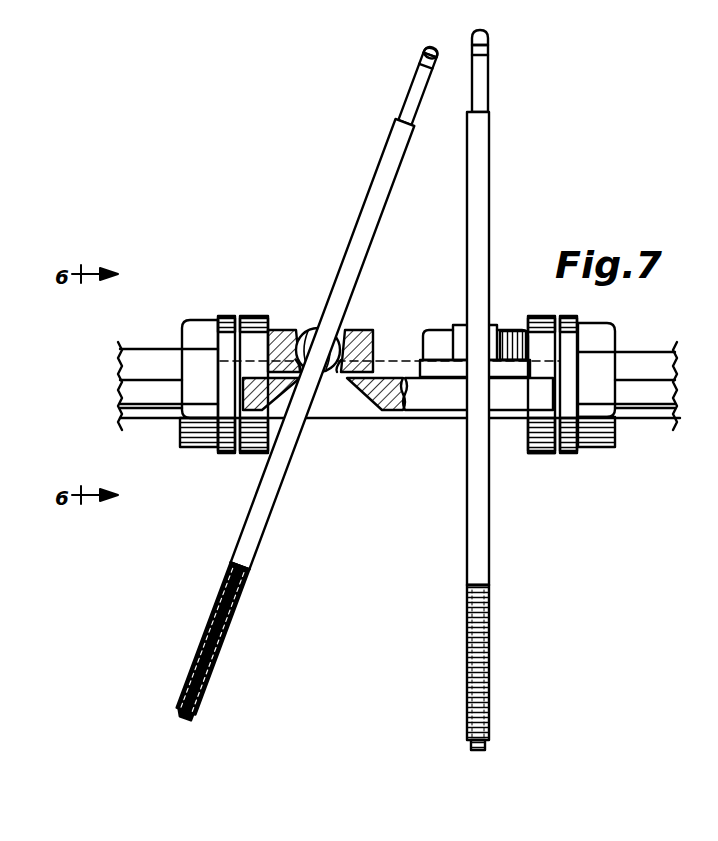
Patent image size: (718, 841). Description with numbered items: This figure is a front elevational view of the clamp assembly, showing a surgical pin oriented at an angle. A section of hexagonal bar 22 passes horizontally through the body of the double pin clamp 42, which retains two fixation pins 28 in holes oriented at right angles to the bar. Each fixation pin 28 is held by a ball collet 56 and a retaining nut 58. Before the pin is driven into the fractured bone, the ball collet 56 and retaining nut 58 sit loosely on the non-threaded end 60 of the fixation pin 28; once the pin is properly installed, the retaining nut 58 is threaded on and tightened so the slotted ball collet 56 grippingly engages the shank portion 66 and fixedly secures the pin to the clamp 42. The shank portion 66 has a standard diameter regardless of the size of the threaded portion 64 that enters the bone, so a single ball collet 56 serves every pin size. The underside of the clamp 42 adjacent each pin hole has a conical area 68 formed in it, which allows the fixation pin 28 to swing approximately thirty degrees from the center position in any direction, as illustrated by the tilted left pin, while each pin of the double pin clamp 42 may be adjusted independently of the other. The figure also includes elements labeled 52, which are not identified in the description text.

The hexagonal bar 22 is at (152, 350).
The fixation pin 28 is at (380, 194).
The clamp 42 is at (540, 453).
The coupling nut 52 is at (202, 325).
The ball collet 56 is at (302, 327).
The retaining nut 58 is at (368, 330).
The non-threaded end 60 is at (420, 62).
The threaded portion 64 is at (198, 705).
The shank portion 66 is at (282, 501).
The conical area 68 is at (345, 405).